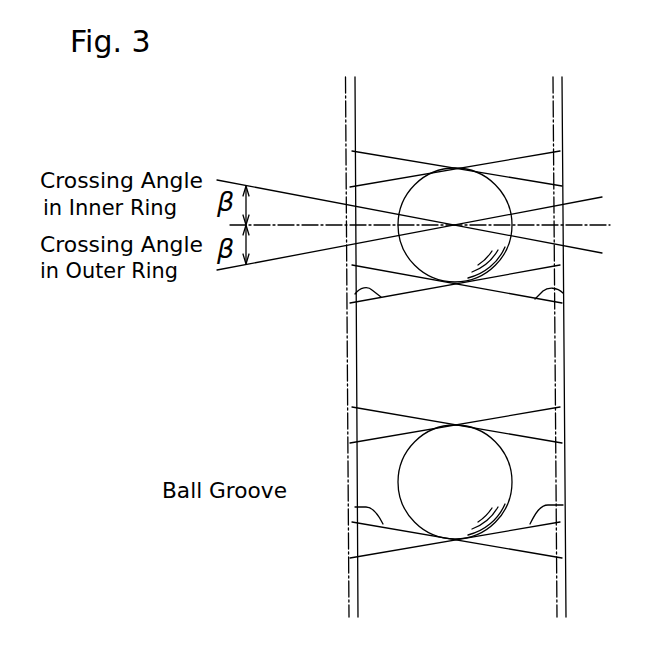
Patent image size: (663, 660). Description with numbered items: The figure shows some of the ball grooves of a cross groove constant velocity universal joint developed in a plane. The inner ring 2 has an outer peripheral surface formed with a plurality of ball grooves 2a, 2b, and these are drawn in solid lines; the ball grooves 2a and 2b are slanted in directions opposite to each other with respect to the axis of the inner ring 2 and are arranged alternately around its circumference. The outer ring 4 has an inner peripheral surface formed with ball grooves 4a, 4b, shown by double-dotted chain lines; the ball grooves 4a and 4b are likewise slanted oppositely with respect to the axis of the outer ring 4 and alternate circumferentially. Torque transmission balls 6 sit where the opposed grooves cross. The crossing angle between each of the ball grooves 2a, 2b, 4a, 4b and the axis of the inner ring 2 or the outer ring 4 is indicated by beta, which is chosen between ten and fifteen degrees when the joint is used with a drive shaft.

The inner ring 2 is at (563, 119).
The outer ring 4 is at (345, 125).
The torque transmission balls 6 is at (444, 178).
The ball groove 2a is at (547, 289).
The ball groove 4a is at (355, 293).
The ball groove 2b is at (563, 505).
The ball groove 4b is at (356, 507).